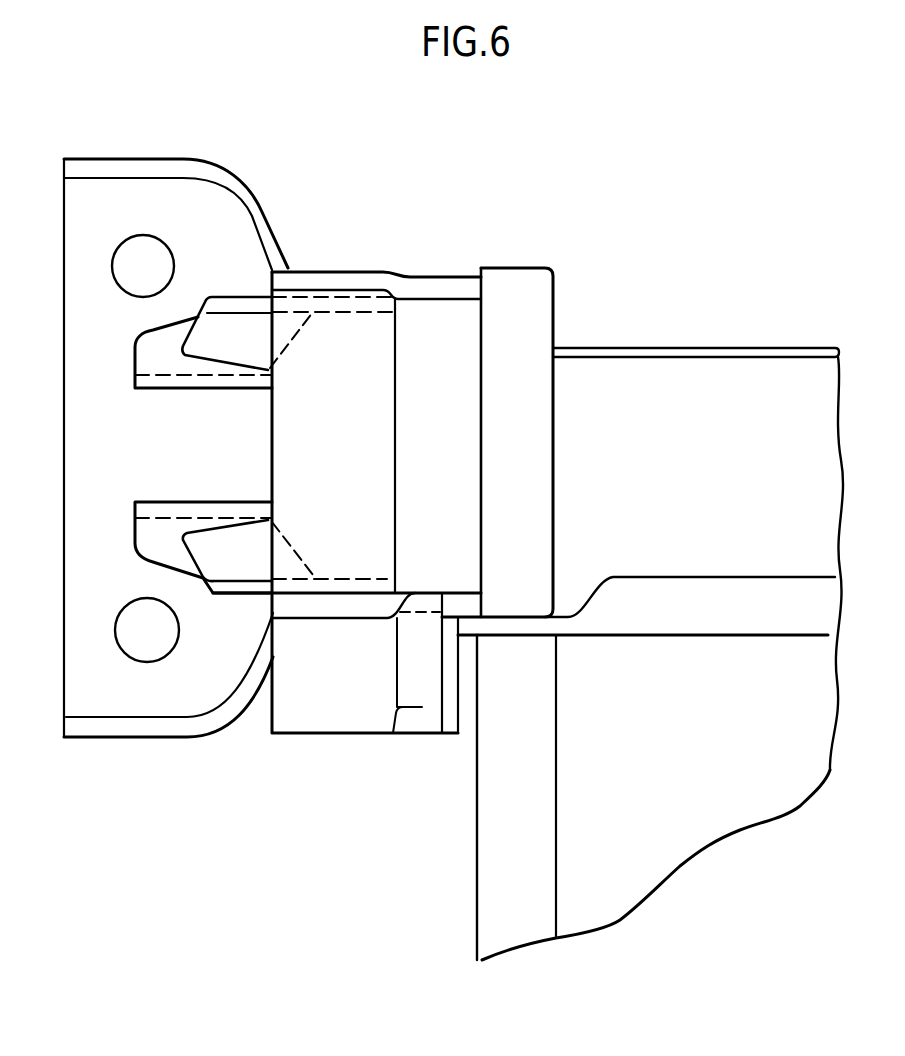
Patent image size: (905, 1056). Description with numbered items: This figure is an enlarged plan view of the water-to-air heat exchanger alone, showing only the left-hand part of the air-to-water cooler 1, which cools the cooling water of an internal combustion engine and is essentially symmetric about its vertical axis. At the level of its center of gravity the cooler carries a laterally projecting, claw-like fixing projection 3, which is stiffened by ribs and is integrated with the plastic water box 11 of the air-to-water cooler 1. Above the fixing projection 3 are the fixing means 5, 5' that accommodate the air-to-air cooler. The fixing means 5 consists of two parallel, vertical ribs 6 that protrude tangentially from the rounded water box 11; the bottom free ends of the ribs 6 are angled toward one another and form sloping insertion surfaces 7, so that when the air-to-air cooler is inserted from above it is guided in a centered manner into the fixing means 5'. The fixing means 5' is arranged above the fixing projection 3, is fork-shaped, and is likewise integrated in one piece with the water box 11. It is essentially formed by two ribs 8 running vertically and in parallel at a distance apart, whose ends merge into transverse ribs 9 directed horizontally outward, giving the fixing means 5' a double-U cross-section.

The air-to-water cooler 1 is at (628, 380).
The fixing projection 3 is at (64, 240).
The fixing means 5 is at (124, 415).
The fixing means 5' is at (82, 378).
The rib 6 is at (228, 303).
The sloping insertion surface 7 is at (245, 328).
The rib 8 is at (155, 378).
The transverse rib 9 is at (158, 348).
The water box 11 is at (418, 327).